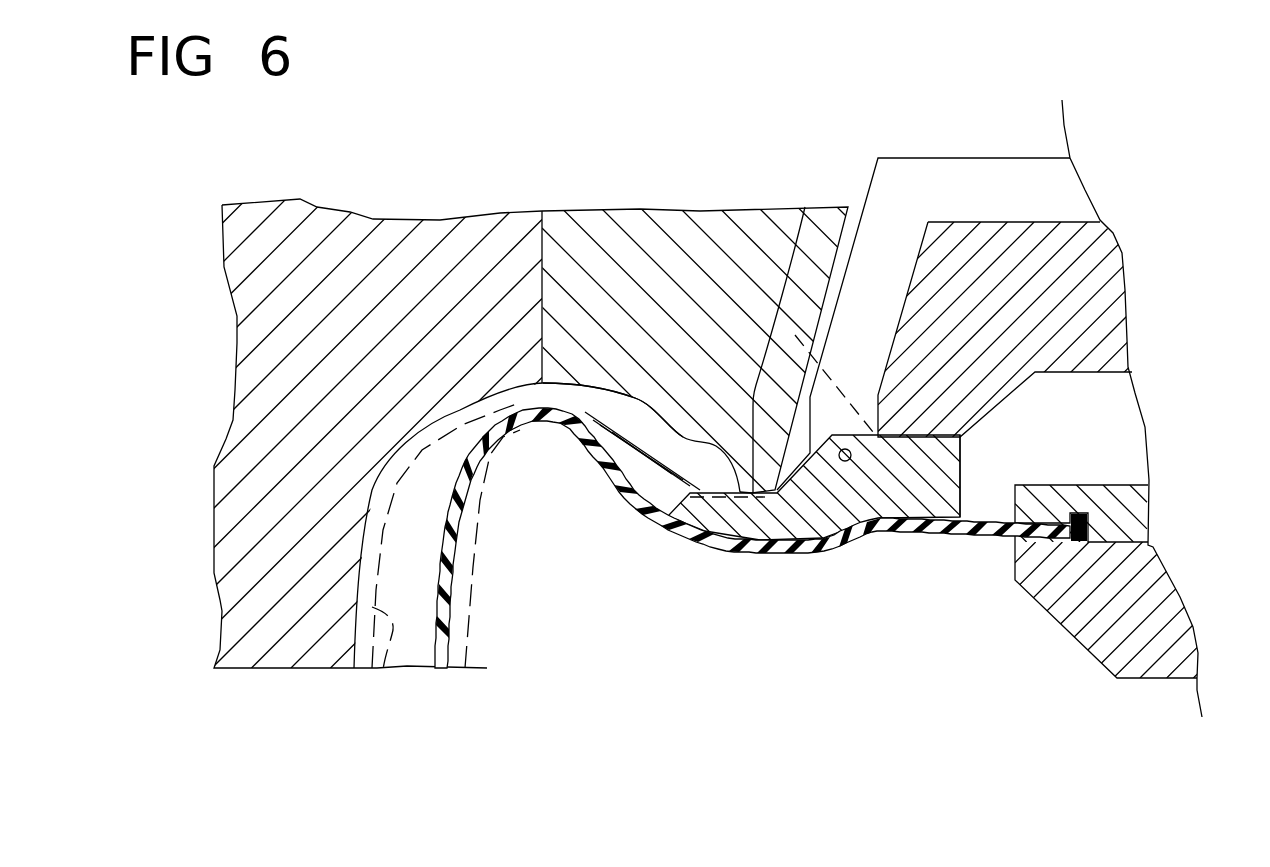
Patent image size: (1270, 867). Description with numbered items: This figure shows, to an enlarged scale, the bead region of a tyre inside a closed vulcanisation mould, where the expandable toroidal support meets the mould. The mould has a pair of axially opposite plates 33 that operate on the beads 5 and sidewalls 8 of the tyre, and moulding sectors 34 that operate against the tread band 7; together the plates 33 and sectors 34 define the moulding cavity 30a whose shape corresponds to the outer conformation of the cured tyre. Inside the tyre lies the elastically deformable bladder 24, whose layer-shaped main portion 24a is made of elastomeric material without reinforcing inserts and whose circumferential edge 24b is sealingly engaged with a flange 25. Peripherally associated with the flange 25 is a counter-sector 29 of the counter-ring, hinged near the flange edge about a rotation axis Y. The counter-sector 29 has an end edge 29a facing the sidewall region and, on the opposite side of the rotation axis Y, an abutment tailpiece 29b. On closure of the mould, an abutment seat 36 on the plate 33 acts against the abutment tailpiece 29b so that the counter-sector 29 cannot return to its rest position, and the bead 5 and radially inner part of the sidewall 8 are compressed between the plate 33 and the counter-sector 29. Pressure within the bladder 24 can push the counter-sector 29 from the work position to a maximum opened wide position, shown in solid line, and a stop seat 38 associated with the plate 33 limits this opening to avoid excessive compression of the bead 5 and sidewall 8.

The bead 5 is at (690, 465).
The tread band 7 is at (383, 670).
The sidewall 8 is at (605, 397).
The elastically deformable bladder 24 is at (760, 565).
The main portion of the bladder 24a is at (473, 570).
The circumferential edge of the bladder 24b is at (1060, 535).
The flange 25 is at (1112, 617).
The counter-sector 29 is at (840, 493).
The end edge of the counter-sector 29a is at (600, 420).
The abutment tailpiece 29b is at (962, 458).
The moulding cavity 30a is at (372, 518).
The plate 33 is at (577, 282).
The moulding sector 34 is at (240, 550).
The abutment seat 36 is at (928, 435).
The stop seat 38 is at (805, 207).
The rotation axis Y is at (855, 462).